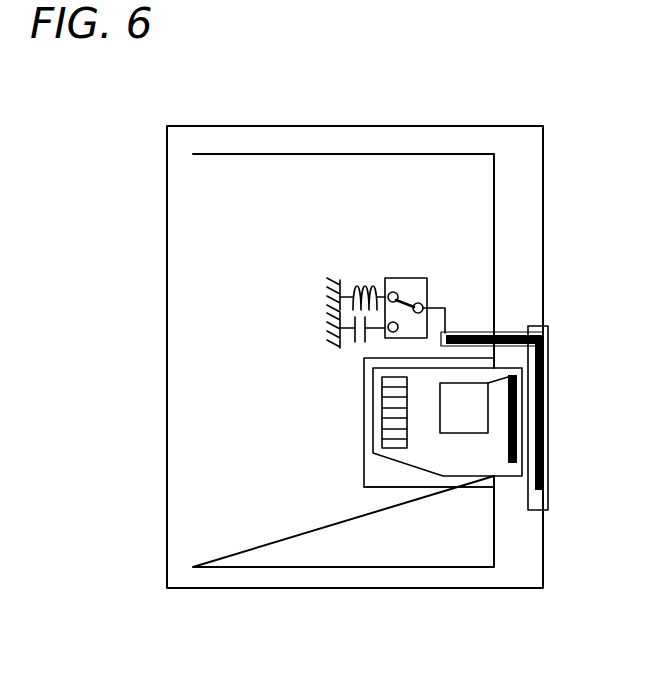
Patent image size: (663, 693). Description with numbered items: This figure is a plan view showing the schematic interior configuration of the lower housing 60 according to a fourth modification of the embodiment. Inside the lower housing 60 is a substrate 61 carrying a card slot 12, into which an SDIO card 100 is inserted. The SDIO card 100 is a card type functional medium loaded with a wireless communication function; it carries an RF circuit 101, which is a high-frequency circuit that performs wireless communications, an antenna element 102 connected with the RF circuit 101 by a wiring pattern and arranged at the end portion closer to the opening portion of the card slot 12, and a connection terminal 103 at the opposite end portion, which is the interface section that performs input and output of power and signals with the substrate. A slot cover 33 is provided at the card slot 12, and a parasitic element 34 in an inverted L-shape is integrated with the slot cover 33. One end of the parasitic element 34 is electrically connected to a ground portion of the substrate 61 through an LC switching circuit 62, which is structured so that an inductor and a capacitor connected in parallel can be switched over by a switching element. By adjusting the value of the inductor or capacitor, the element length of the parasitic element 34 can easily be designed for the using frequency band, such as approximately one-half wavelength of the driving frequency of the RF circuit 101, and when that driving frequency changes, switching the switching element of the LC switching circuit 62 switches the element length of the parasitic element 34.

The lower housing 60 is at (270, 125).
The substrate 61 is at (392, 153).
The LC switching circuit 62 is at (405, 278).
The slot cover 33 is at (548, 413).
The parasitic element 34 is at (543, 463).
The SDIO card 100 is at (470, 477).
The RF circuit 101 is at (458, 383).
The antenna element 102 is at (518, 397).
The connection terminal 103 is at (393, 449).
The card slot 12 is at (415, 488).